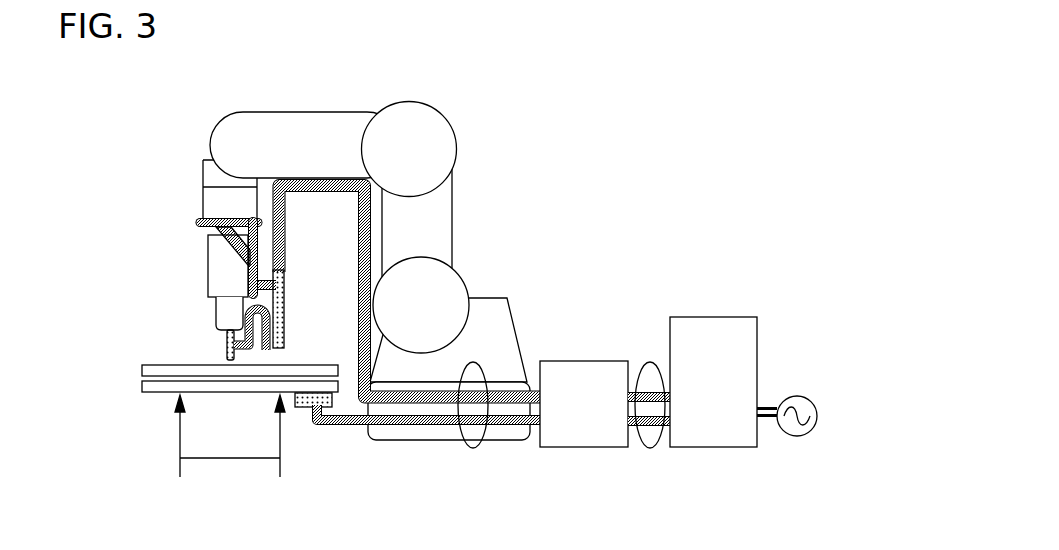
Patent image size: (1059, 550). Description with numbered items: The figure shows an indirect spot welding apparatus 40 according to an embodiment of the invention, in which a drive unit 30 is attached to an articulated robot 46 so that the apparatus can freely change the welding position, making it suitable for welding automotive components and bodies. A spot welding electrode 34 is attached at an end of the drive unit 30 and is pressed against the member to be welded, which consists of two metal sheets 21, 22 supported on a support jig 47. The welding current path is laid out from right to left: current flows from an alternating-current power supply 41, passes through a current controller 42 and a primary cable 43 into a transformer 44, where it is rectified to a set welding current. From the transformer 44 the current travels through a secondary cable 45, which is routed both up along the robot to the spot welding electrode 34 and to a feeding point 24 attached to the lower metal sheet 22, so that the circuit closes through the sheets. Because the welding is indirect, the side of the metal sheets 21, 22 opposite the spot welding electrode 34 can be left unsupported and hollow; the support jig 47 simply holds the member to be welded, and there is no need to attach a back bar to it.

The indirect spot welding apparatus 40 is at (578, 103).
The articulated robot 46 is at (323, 122).
The drive unit 30 is at (220, 245).
The spot welding electrode 34 is at (227, 348).
The metal sheet 21 is at (153, 372).
The metal sheet 22 is at (150, 393).
The support jig 47 is at (222, 458).
The feeding point 24 is at (307, 407).
The secondary cable 45 is at (475, 448).
The transformer 44 is at (583, 373).
The primary cable 43 is at (648, 448).
The current controller 42 is at (710, 317).
The alternating-current power supply 41 is at (797, 396).